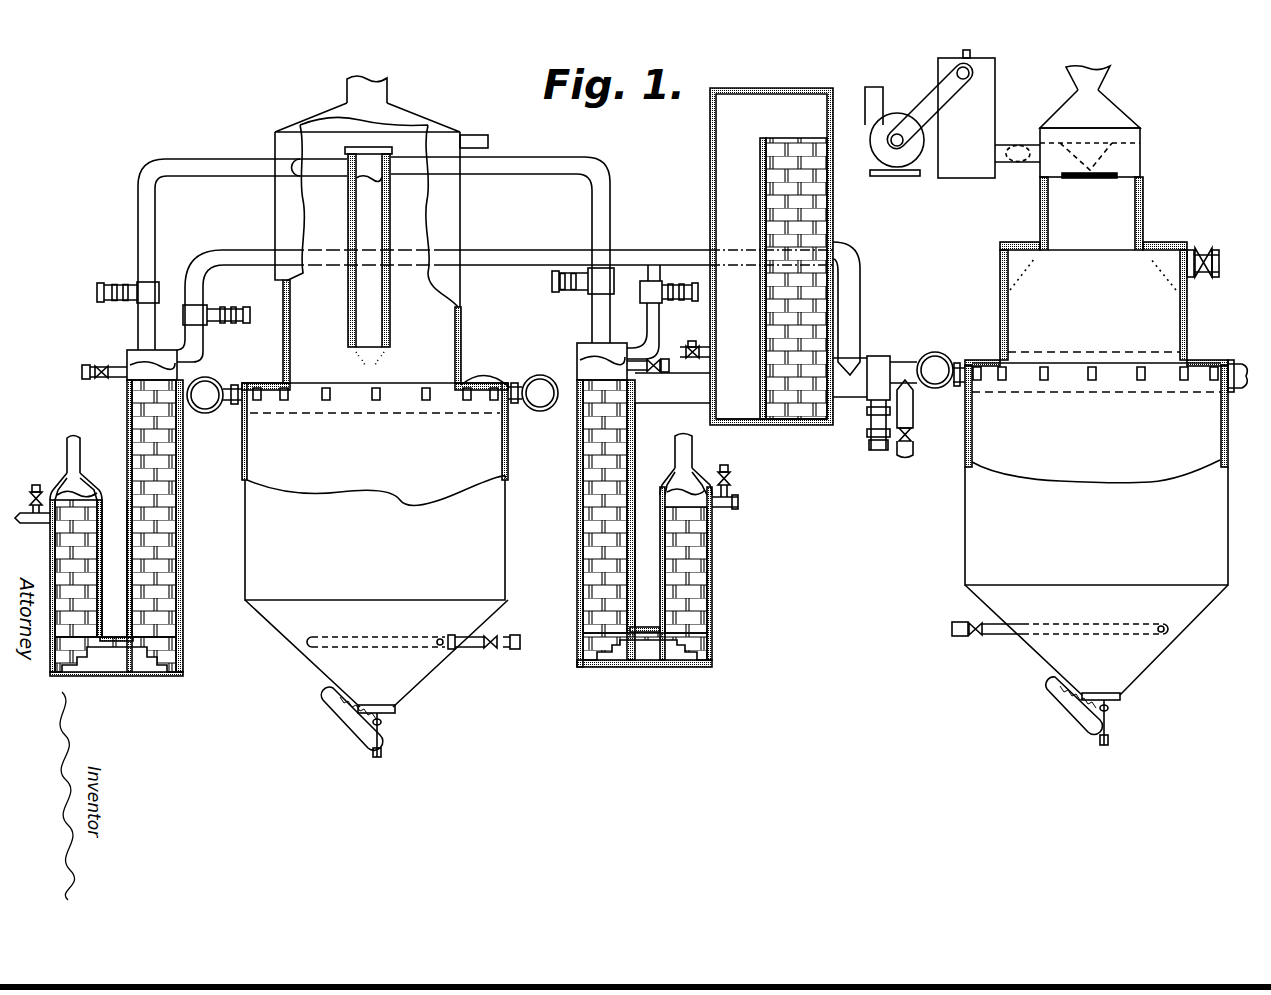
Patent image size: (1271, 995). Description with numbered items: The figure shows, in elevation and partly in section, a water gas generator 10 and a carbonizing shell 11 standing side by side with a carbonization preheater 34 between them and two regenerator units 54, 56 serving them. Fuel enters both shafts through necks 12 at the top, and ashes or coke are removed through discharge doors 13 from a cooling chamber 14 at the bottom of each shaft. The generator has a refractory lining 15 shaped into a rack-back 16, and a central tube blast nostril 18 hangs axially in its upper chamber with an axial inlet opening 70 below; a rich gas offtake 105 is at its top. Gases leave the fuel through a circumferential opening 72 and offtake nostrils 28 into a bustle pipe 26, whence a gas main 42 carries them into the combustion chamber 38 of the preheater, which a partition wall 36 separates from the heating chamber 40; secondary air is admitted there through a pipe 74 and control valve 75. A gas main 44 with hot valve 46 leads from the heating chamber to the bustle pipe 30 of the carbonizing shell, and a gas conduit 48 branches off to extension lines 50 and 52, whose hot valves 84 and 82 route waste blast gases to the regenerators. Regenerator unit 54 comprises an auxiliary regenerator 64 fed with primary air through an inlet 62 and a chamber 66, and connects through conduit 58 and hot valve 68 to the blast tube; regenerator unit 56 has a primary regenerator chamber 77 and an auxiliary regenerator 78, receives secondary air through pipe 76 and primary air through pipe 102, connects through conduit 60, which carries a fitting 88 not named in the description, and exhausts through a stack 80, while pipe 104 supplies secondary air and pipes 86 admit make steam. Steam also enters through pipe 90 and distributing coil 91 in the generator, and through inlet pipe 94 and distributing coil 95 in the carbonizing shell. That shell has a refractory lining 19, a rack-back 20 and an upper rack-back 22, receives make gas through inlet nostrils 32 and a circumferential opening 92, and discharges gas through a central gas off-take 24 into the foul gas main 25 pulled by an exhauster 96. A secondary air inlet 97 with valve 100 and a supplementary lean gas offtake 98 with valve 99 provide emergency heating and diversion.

The water gas generator 10 is at (459, 209).
The carbonizing shell 11 is at (1001, 302).
The necks 12 is at (388, 101).
The discharge doors 13 is at (400, 731).
The cooling chamber 14 is at (313, 657).
The refractory lining 15 is at (252, 449).
The rack-back 16 is at (476, 371).
The central tube blast nostril 18 is at (390, 313).
The refractory lining 19 is at (1007, 318).
The rack-back 20 is at (1200, 358).
The upper rack-back 22 is at (1160, 243).
The central gas off-take 24 is at (1140, 160).
The foul gas main 25 is at (1020, 163).
The bustle pipe 26 is at (553, 413).
The offtake nostrils 28 is at (236, 405).
The bustle pipe 30 is at (940, 357).
The inlet nostrils 32 is at (1000, 380).
The carbonization preheater 34 is at (833, 196).
The partition wall 36 is at (762, 228).
The combustion chamber 38 is at (748, 404).
The heating chamber 40 is at (815, 229).
The gas main 42 is at (662, 397).
The gas main 44 is at (862, 366).
The hot valve 46 is at (870, 435).
The gas conduit 48 is at (861, 276).
The extension line 50 is at (192, 277).
The extension line 52 is at (646, 318).
The regenerator unit 54 is at (127, 510).
The regenerator unit 56 is at (633, 505).
The conduit 58 is at (156, 233).
The conduit 60 is at (609, 208).
The inlet 62 is at (22, 524).
The auxiliary regenerator 64 is at (56, 572).
The chamber 66 is at (183, 523).
The hot valve 68 is at (105, 301).
The axial inlet opening 70 is at (373, 332).
The circumferential opening 72 is at (498, 371).
The pipe 74 is at (692, 346).
The control valve 75 is at (700, 360).
The pipe 76 is at (660, 359).
The primary regenerator chamber 77 is at (593, 488).
The auxiliary regenerator 78 is at (713, 556).
The stack 80 is at (82, 459).
The hot valve 82 is at (659, 292).
The hot valve 84 is at (204, 318).
The pipes 86 is at (34, 486).
The coupling 88 is at (561, 288).
The pipe 90 is at (479, 645).
The distributing coil 91 is at (384, 644).
The circumferential opening 92 is at (1214, 358).
The inlet pipe 94 is at (997, 635).
The distributing coil 95 is at (1071, 634).
The exhauster 96 is at (889, 118).
The secondary air inlet 97 is at (913, 416).
The supplementary lean gas offtake 98 is at (1210, 278).
The valve 99 is at (1197, 262).
The valve 100 is at (913, 438).
The pipe 102 is at (737, 506).
The pipe 104 is at (93, 364).
The rich gas offtake 105 is at (477, 134).